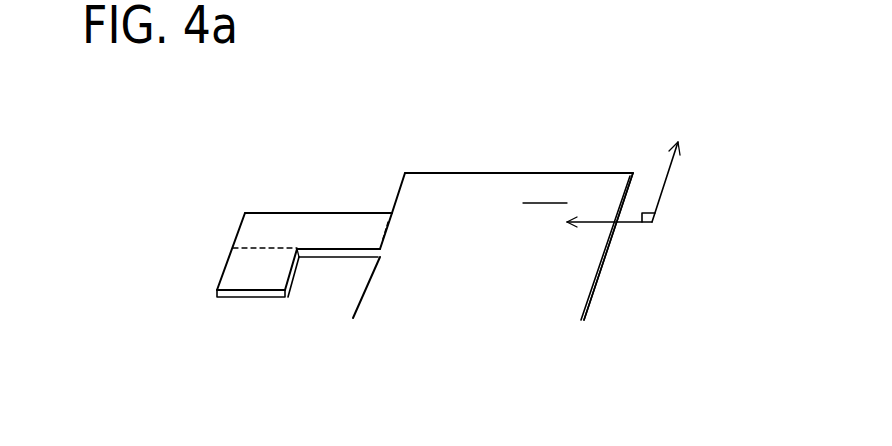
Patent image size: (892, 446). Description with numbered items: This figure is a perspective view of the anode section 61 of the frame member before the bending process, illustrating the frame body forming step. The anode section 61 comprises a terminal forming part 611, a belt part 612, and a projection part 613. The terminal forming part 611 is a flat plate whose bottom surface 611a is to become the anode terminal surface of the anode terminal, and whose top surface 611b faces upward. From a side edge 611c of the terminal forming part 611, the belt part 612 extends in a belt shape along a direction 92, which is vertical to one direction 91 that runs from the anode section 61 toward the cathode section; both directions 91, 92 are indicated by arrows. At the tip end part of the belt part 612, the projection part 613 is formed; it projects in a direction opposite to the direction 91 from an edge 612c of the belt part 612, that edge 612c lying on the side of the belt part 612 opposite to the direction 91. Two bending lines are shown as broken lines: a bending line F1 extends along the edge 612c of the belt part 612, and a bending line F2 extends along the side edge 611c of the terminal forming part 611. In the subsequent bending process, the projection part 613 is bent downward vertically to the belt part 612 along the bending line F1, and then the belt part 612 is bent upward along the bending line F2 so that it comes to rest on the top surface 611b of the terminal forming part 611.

The anode section 61 is at (590, 167).
The terminal forming part 611 is at (448, 185).
The bottom surface 611a is at (582, 258).
The top surface 611b is at (545, 191).
The side edge 611c is at (358, 300).
The belt part 612 is at (310, 225).
The edge 612c is at (328, 255).
The projection part 613 is at (253, 273).
The direction 91 is at (667, 183).
The direction 92 is at (600, 224).
The bending line F1 is at (263, 248).
The bending line F2 is at (388, 222).